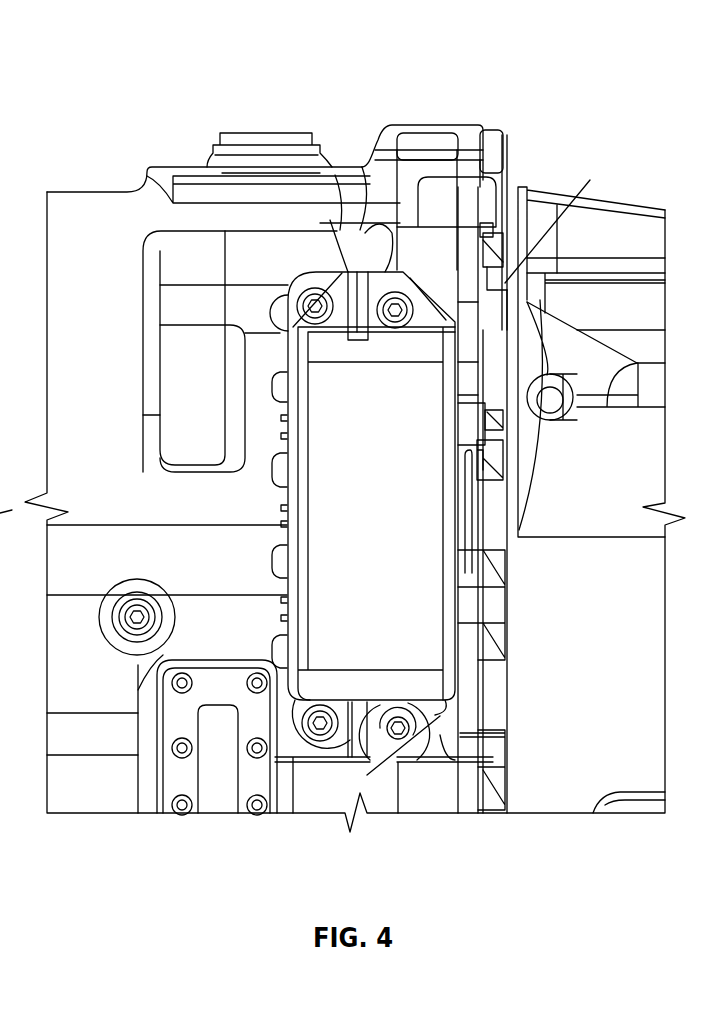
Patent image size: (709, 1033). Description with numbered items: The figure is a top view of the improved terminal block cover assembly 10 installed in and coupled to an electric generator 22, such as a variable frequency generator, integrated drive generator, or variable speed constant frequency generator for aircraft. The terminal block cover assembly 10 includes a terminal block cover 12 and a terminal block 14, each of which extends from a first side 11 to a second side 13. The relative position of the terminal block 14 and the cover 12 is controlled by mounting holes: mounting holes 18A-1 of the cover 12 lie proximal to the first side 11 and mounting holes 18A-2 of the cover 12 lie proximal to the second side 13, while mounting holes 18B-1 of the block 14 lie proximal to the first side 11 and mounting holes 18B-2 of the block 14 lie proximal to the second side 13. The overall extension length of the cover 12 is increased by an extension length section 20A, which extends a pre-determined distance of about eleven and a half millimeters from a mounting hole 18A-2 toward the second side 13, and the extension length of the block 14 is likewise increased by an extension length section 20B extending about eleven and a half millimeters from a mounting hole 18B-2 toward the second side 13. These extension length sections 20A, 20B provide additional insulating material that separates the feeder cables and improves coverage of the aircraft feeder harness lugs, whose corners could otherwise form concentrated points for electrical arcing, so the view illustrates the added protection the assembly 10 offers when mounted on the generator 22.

The terminal block cover assembly 10 is at (428, 308).
The first side 11 is at (149, 167).
The terminal block cover 12 is at (355, 285).
The second side 13 is at (525, 258).
The terminal block 14 is at (242, 300).
The mounting holes 18A-1 is at (320, 745).
The mounting holes 18A-2 is at (400, 293).
The mounting holes 18B-1 is at (307, 280).
The mounting holes 18B-2 is at (400, 763).
The extension length section 20A is at (498, 325).
The extension length section 20B is at (435, 715).
The electric generator 22 is at (419, 114).